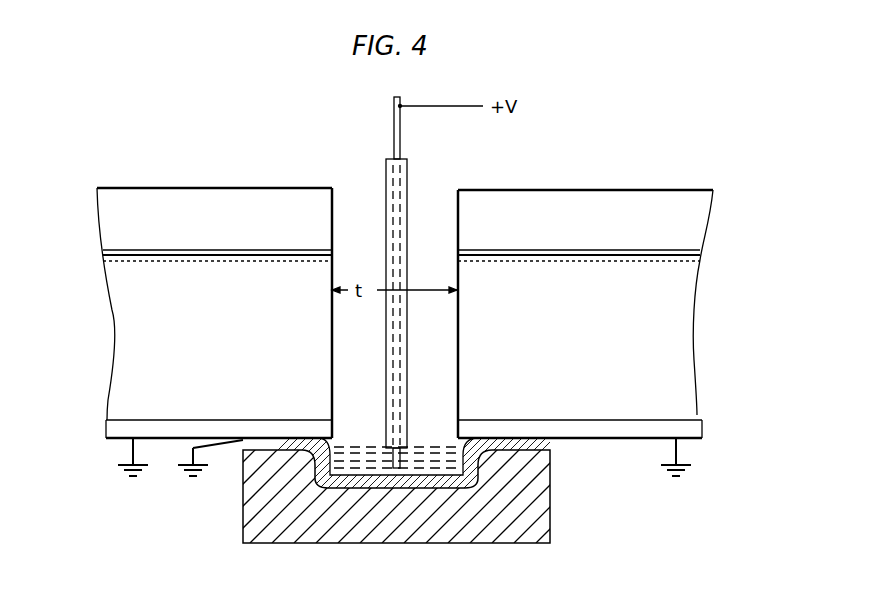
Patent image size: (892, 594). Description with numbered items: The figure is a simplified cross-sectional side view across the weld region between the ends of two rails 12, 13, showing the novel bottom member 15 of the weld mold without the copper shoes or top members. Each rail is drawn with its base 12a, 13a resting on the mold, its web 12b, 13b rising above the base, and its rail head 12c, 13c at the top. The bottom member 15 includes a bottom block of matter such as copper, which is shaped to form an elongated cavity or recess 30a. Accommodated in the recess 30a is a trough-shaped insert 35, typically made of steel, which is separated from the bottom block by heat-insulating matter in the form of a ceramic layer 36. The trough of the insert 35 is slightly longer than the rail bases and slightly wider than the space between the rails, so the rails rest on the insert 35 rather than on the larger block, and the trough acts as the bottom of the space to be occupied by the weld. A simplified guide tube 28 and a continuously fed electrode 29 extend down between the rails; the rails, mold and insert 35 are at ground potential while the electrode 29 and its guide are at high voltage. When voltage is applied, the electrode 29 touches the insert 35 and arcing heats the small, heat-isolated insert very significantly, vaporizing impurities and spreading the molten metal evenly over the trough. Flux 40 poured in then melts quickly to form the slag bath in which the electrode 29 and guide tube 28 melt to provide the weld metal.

The rail 12 is at (198, 162).
The base 12a is at (117, 418).
The web 12b is at (130, 333).
The rail head 12c is at (110, 238).
The rail 13 is at (668, 172).
The base 13a is at (680, 427).
The web 13b is at (683, 342).
The rail head 13c is at (692, 230).
The guide tube 28 is at (388, 184).
The electrode 29 is at (394, 136).
The flux 40 is at (350, 455).
The trough-shaped insert 35 is at (478, 462).
The recess 30a is at (470, 488).
The ceramic layer 36 is at (317, 480).
The bottom member 15 is at (550, 543).